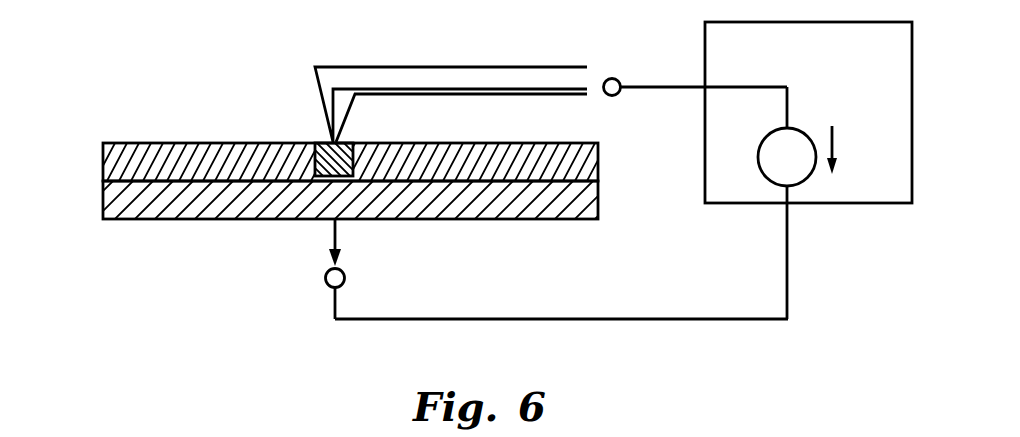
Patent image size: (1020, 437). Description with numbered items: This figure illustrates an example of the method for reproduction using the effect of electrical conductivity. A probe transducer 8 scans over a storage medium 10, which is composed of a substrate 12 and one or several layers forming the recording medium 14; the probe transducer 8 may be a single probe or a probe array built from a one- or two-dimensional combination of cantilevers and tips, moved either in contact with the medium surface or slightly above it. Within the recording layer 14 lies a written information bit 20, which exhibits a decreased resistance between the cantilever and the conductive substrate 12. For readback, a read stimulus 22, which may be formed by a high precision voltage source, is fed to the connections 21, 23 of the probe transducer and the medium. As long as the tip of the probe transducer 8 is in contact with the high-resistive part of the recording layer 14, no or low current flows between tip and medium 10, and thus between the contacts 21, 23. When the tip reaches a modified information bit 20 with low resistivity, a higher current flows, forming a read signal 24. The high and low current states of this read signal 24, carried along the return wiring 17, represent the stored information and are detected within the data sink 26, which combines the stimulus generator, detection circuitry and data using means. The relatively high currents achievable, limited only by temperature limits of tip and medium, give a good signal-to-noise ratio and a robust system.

The probe transducer 8 is at (327, 78).
The storage medium 10 is at (343, 164).
The substrate 12 is at (582, 196).
The recording medium 14 is at (582, 158).
The read stimulus 17 is at (515, 319).
The information bit 20 is at (323, 139).
The connection 21 is at (612, 78).
The read stimulus 22 is at (682, 46).
The connection 23 is at (326, 278).
The read signal 24 is at (787, 275).
The data sink 26 is at (873, 203).